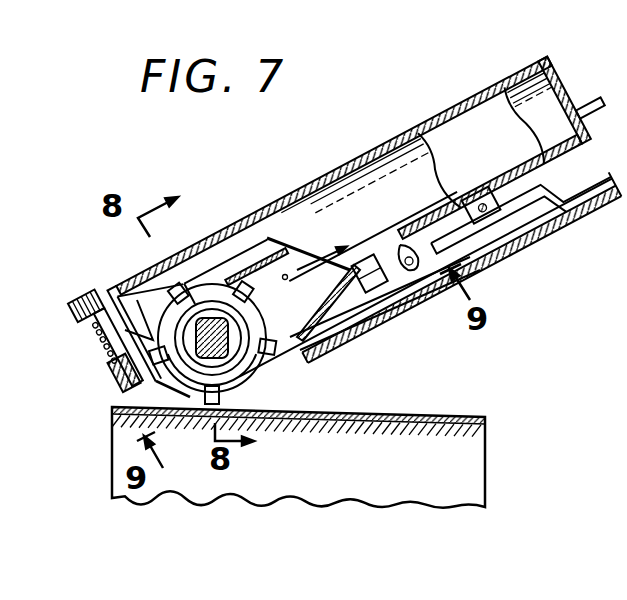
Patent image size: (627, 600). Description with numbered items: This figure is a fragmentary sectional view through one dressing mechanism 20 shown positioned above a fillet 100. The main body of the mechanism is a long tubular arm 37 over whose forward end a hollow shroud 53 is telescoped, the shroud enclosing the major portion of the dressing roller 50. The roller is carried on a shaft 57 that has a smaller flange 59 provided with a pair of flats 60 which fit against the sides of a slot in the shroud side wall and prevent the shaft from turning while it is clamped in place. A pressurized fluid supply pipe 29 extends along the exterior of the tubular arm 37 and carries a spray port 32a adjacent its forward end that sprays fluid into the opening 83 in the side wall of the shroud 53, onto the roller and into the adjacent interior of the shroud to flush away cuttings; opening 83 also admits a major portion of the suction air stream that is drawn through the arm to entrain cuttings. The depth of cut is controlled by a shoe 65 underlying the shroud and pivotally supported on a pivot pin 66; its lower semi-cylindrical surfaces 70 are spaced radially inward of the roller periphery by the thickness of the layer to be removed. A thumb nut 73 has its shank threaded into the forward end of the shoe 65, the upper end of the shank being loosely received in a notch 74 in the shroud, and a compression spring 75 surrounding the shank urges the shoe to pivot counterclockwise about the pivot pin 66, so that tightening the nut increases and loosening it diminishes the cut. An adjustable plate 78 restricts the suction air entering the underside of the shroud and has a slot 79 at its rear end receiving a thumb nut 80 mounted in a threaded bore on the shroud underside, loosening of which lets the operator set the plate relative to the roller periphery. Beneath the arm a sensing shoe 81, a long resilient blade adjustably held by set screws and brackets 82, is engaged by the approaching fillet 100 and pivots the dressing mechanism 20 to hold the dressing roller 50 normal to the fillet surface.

The dressing mechanism 20 is at (426, 109).
The pressurized fluid supply pipe 29 is at (588, 103).
The spray port 32a is at (285, 273).
The tubular arm 37 is at (467, 100).
The dressing roller 50 is at (250, 374).
The shroud 53 is at (287, 186).
The shaft 57 is at (215, 325).
The smaller flange 59 is at (206, 322).
The flats 60 is at (261, 302).
The shoe 65 is at (112, 398).
The pivot pin 66 is at (407, 262).
The semi-cylindrical surfaces 70 is at (183, 405).
The thumb nut 73 is at (70, 321).
The notch 74 is at (93, 298).
The compression spring 75 is at (93, 347).
The adjustable plate 78 is at (336, 340).
The slot 79 is at (346, 297).
The thumb nut 80 is at (389, 305).
The sensing shoe 81 is at (548, 234).
The brackets 82 is at (478, 203).
The opening 83 is at (306, 252).
The fillet 100 is at (463, 415).